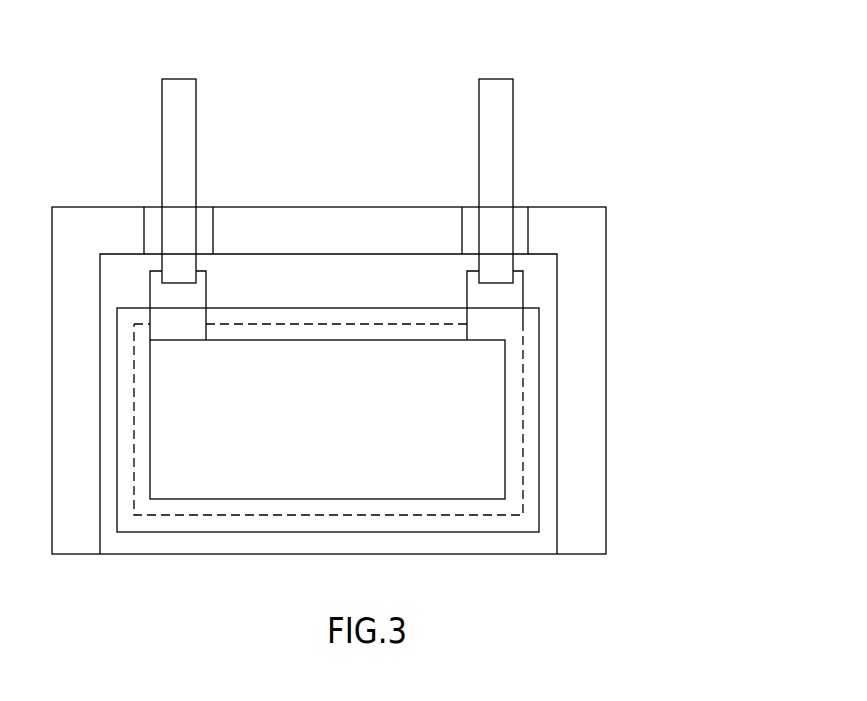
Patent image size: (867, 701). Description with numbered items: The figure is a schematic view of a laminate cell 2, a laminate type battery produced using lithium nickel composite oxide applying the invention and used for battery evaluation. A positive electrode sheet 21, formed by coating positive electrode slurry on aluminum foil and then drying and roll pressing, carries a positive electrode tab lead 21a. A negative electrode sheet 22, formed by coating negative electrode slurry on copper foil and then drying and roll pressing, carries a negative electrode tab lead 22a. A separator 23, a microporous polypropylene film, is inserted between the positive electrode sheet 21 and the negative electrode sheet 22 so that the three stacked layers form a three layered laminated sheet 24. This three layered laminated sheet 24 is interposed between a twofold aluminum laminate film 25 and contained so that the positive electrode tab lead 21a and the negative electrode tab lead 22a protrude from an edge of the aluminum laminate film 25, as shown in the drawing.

The laminate cell 2 is at (635, 142).
The positive electrode sheet 21 is at (487, 365).
The positive electrode tab lead 21a is at (172, 162).
The negative electrode sheet 22 is at (522, 406).
The negative electrode tab lead 22a is at (504, 147).
The separator 23 is at (532, 523).
The three layered laminated sheet 24 is at (726, 287).
The aluminum laminate film 25 is at (336, 230).